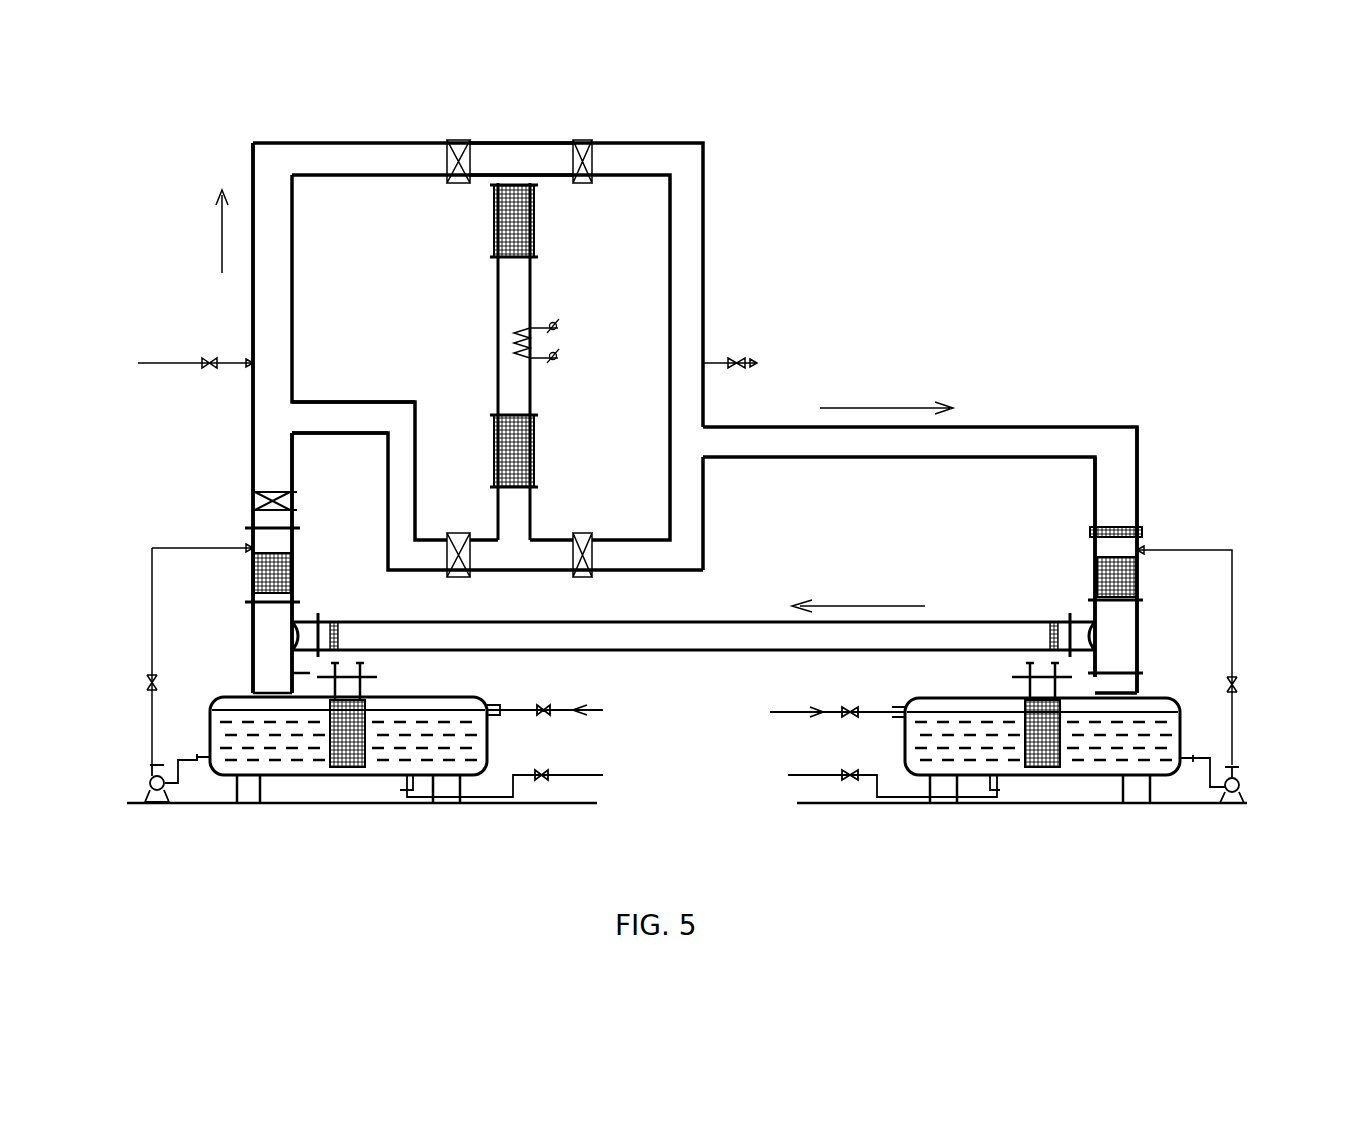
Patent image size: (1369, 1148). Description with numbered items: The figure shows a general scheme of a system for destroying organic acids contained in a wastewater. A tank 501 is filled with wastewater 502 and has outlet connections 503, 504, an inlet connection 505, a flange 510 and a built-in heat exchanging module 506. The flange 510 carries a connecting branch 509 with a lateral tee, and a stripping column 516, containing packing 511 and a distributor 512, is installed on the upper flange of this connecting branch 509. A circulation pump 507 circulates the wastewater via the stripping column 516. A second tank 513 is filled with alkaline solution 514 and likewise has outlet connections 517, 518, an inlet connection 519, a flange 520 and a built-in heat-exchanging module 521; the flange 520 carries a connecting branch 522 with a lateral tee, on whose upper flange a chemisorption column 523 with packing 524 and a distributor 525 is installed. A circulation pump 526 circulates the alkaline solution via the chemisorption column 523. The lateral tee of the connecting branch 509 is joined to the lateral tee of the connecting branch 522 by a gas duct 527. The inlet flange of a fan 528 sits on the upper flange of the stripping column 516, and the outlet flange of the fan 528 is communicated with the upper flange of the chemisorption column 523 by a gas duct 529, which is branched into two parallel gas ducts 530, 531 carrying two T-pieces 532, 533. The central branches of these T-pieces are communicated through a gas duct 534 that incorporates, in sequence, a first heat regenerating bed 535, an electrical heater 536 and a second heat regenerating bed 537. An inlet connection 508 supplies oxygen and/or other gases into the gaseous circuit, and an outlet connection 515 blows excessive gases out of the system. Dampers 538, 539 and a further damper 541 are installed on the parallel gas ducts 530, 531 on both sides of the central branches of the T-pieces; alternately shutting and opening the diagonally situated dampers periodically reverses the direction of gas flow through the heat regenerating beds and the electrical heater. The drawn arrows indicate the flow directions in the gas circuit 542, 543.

The tank 501 is at (440, 678).
The wastewater 502 is at (283, 763).
The outlet connection 503 is at (210, 760).
The outlet connection 504 is at (400, 787).
The inlet connection 505 is at (493, 705).
The built-in heat exchanging module 506 is at (337, 767).
The circulation pump 507 is at (150, 783).
The inlet connection 508 is at (250, 365).
The connecting branch 509 is at (260, 640).
The flange 510 is at (245, 677).
The packing 511 is at (247, 548).
The distributor 512 is at (267, 553).
The second tank 513 is at (1105, 773).
The alkaline solution 514 is at (1067, 757).
The outlet connection 515 is at (708, 360).
The stripping column 516 is at (293, 567).
The outlet connection 517 is at (993, 787).
The outlet connection 518 is at (1183, 767).
The inlet connection 519 is at (903, 712).
The flange 520 is at (1137, 683).
The built-in heat-exchanging module 521 is at (1020, 705).
The connecting branch 522 is at (1140, 630).
The chemisorption column 523 is at (1150, 550).
The packing 524 is at (1095, 590).
The distributor 525 is at (1095, 553).
The circulation pump 526 is at (1245, 785).
The gas duct 527 is at (722, 650).
The fan 528 is at (267, 492).
The gas duct 529 is at (920, 533).
The parallel gas duct 530 is at (700, 258).
The parallel gas duct 531 is at (690, 552).
The T-piece 532 is at (509, 143).
The T-piece 533 is at (550, 573).
The gas duct 534 is at (530, 513).
The first heat regenerating bed 535 is at (493, 440).
The electrical heater 536 is at (498, 330).
The second heat regenerating bed 537 is at (493, 228).
The damper 538 is at (447, 155).
The damper 539 is at (593, 150).
The damper 541 is at (453, 577).
The lower duct 542 is at (623, 573).
The flow direction arrow 543 is at (886, 384).